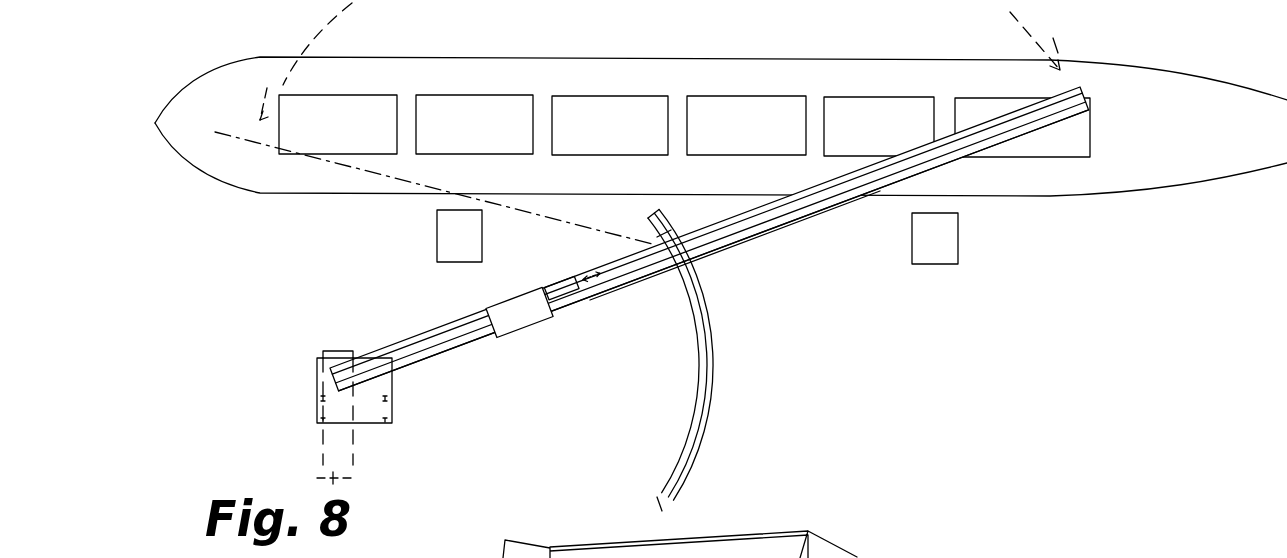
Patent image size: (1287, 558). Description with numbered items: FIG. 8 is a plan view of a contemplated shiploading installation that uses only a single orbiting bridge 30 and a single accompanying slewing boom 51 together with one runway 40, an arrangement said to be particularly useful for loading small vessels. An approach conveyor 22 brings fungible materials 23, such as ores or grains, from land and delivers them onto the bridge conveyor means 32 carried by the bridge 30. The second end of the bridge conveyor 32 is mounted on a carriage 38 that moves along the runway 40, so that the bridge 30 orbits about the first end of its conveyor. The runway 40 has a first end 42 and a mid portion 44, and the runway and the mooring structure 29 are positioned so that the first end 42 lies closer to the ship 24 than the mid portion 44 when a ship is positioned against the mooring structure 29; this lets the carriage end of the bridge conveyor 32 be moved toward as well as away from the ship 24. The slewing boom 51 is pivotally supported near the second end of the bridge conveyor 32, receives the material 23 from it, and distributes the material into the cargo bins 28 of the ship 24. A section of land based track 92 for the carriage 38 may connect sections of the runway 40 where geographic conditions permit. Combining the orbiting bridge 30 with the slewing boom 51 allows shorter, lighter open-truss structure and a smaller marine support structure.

The approach conveyor 22 is at (322, 462).
The fungible materials 23 is at (588, 284).
The ship 24 is at (1007, 197).
The cargo bins 28 is at (1078, 147).
The mooring structure 29 is at (448, 262).
The bridge 30 is at (463, 345).
The bridge conveyor means 32 is at (423, 357).
The carriage 38 is at (697, 272).
The runway 40 is at (714, 413).
The first end of the runway 42 is at (653, 233).
The mid portion of the runway 44 is at (717, 358).
The slewing boom 51 is at (840, 206).
The land based track 92 is at (695, 380).